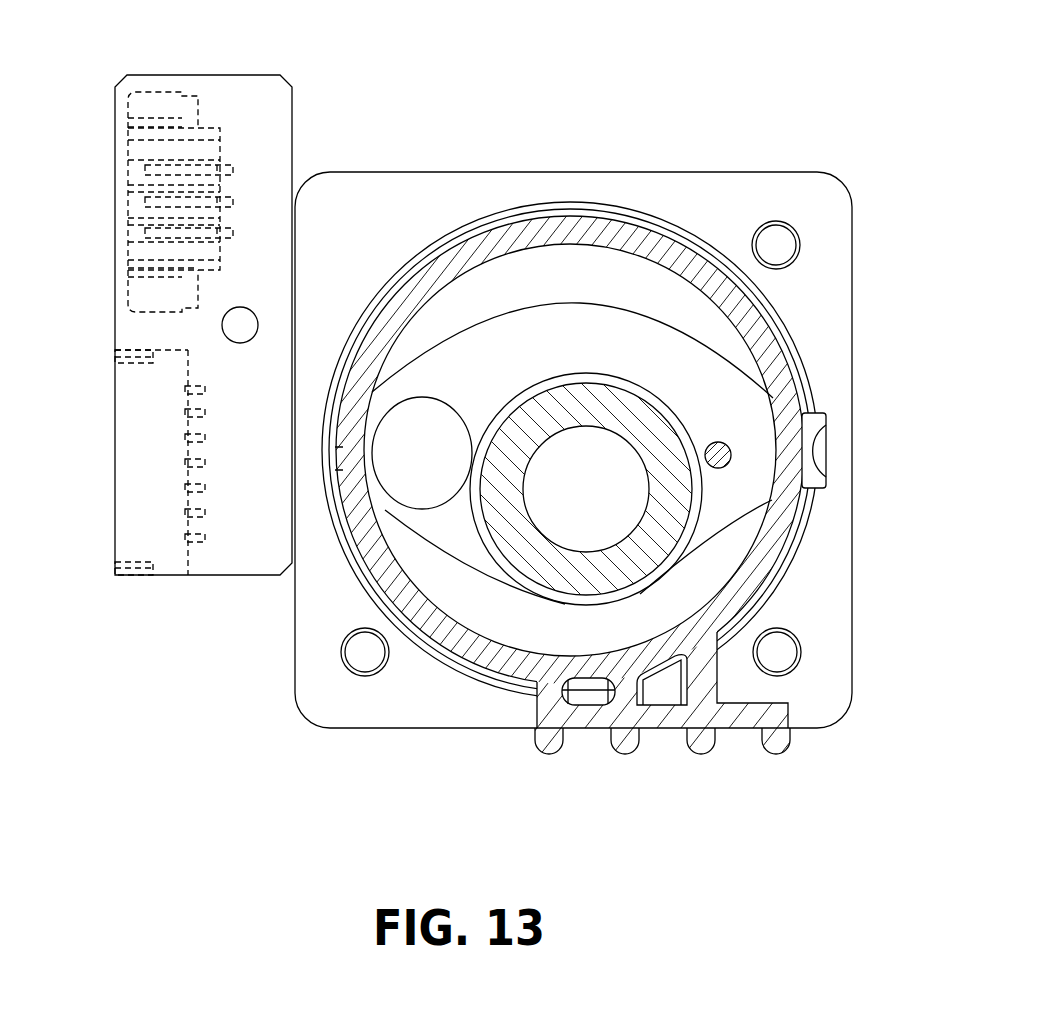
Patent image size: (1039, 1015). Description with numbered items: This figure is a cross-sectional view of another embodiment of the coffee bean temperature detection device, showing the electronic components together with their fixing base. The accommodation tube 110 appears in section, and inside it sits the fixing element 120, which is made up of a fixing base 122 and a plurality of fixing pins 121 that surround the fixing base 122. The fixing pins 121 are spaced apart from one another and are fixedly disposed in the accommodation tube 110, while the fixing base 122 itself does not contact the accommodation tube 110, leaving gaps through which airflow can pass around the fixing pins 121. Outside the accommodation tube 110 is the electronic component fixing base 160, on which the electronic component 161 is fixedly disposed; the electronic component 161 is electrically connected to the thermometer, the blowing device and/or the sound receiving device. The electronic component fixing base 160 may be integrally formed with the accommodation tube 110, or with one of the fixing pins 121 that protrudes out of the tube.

The accommodation tube 110 is at (778, 366).
The fixing element 120 is at (572, 321).
The fixing pins 121 is at (415, 388).
The fixing base 122 is at (583, 316).
The electronic component fixing base 160 is at (246, 92).
The electronic component 161 is at (137, 216).